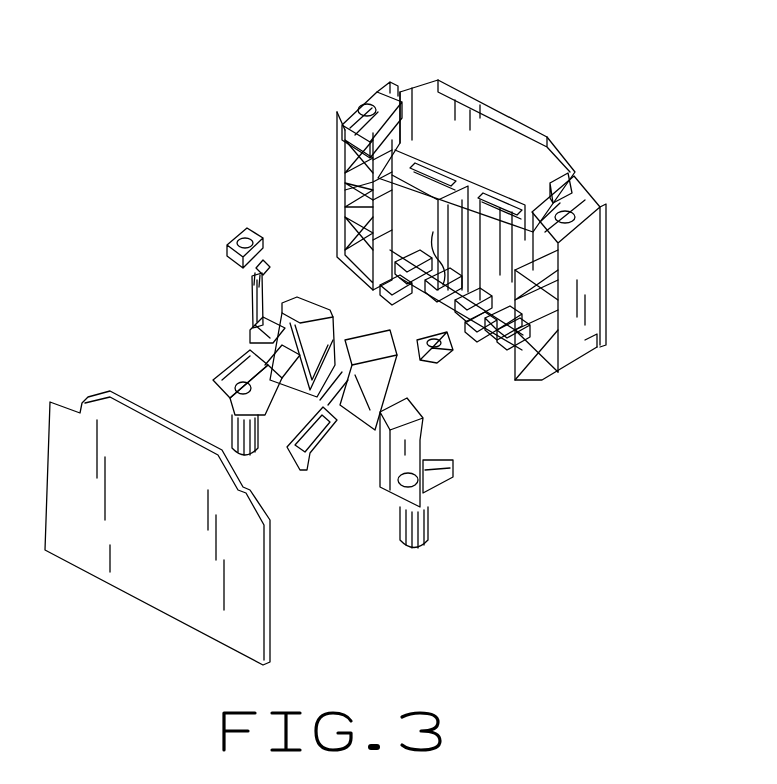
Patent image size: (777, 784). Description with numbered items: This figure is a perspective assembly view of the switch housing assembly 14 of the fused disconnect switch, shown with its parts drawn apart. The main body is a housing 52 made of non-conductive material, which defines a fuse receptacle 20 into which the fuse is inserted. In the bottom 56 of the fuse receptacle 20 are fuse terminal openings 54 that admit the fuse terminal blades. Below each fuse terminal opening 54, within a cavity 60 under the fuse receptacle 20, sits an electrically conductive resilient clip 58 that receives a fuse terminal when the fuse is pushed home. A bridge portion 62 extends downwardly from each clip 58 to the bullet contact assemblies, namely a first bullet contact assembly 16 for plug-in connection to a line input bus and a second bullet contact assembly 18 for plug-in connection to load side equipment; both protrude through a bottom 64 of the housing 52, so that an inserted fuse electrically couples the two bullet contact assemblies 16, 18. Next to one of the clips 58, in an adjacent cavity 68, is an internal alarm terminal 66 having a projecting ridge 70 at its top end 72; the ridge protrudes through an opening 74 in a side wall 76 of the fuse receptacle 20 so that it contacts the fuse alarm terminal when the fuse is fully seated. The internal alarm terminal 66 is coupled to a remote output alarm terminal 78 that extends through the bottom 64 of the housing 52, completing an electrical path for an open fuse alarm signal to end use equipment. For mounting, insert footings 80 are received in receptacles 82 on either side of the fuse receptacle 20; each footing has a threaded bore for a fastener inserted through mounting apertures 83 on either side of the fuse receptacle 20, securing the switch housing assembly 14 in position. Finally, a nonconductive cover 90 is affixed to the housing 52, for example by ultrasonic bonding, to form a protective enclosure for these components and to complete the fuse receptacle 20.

The switch housing assembly 14 is at (558, 118).
The first bullet contact assembly 16 is at (245, 455).
The second bullet contact assembly 18 is at (418, 548).
The fuse receptacle 20 is at (497, 152).
The housing 52 is at (590, 177).
The fuse terminal openings 54 is at (445, 180).
The bottom 56 is at (573, 177).
The resilient clip 58 is at (295, 385).
The cavity 60 is at (355, 278).
The bridge portion 62 is at (245, 350).
The bottom 64 is at (511, 345).
The internal alarm terminal 66 is at (252, 304).
The adjacent cavity 68 is at (345, 172).
The projecting ridge 70 is at (272, 268).
The top end 72 is at (254, 278).
The opening 74 is at (360, 112).
The side wall 76 is at (405, 108).
The remote output alarm terminal 78 is at (300, 472).
The mounting insert footings 80 is at (243, 228).
The receptacles 82 is at (340, 130).
The mounting apertures 83 is at (382, 95).
The cover 90 is at (253, 605).